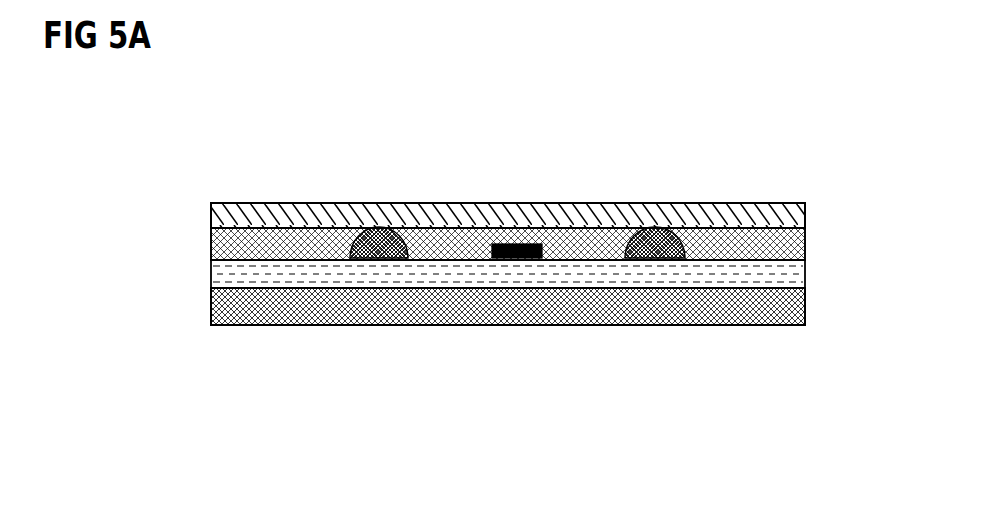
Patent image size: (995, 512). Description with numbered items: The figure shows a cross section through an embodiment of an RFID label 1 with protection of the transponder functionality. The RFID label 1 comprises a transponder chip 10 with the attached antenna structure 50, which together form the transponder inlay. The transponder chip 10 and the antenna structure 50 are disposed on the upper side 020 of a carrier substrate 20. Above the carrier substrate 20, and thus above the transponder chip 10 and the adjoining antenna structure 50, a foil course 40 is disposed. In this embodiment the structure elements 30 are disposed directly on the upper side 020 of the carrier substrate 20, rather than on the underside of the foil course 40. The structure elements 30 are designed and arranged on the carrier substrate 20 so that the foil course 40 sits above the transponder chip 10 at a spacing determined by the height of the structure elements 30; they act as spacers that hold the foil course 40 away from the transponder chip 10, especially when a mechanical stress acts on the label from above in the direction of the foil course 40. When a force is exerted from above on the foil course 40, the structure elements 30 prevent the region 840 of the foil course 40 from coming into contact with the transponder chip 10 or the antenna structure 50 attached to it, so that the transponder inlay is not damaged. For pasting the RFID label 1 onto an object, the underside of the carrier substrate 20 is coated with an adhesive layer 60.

The RFID label 1 is at (655, 140).
The transponder chip 10 is at (512, 258).
The carrier substrate 20 is at (667, 272).
The upper side of the carrier substrate 020 is at (293, 260).
The structure elements 30 is at (372, 258).
The foil course 40 is at (752, 202).
The antenna structure 50 is at (461, 260).
The adhesive layer 60 is at (597, 317).
The region of the foil course 840 is at (482, 203).